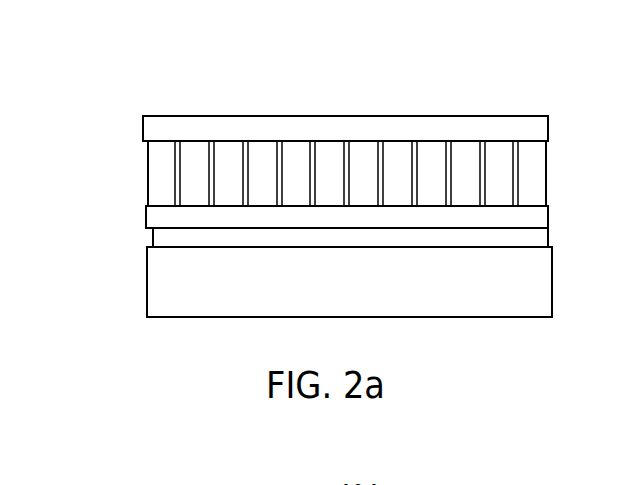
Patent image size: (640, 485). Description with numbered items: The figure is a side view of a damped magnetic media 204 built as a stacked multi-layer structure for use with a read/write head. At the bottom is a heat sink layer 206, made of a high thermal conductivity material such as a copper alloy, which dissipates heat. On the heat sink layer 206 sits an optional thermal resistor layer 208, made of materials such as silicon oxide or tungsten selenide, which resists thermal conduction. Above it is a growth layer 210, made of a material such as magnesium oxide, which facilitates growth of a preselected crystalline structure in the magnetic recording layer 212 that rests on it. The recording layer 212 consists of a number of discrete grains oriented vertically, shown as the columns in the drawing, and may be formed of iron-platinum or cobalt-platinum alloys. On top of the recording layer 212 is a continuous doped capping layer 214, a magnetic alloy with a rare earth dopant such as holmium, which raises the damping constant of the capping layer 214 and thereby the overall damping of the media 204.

The damped magnetic media 204 is at (365, 68).
The heat sink layer 206 is at (552, 284).
The thermal resistor layer 208 is at (548, 239).
The growth layer 210 is at (548, 208).
The magnetic recording layer 212 is at (546, 170).
The continuous doped capping layer 214 is at (548, 133).